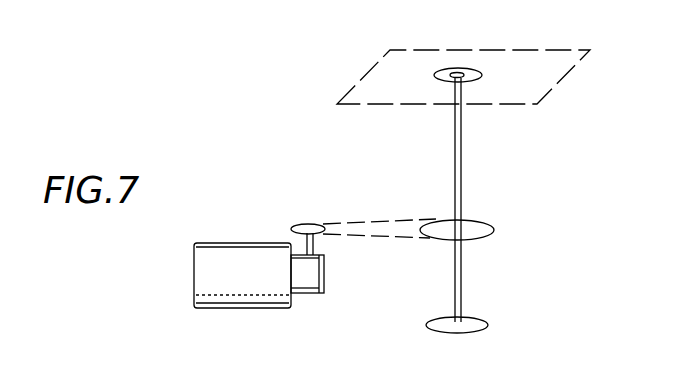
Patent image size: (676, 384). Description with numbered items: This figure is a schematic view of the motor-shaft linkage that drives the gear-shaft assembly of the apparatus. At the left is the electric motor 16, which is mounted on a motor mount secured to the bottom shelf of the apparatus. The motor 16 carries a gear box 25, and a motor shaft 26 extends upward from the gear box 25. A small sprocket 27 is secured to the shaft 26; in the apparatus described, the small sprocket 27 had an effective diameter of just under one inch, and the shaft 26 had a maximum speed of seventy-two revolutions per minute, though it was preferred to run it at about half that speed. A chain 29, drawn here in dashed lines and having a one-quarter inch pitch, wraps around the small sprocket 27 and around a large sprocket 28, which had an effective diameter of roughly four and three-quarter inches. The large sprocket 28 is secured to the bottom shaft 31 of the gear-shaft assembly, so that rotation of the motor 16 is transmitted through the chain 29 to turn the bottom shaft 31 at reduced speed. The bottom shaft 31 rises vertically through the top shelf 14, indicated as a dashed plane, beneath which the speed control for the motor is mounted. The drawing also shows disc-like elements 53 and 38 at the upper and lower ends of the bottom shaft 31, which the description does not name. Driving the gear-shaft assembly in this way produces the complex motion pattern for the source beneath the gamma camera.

The top shelf 14 is at (382, 77).
The upper disc 53 is at (475, 70).
The bottom shaft 31 is at (463, 172).
The large sprocket 28 is at (490, 228).
The lower disc 38 is at (477, 322).
The small sprocket 27 is at (313, 223).
The motor shaft 26 is at (317, 243).
The chain 29 is at (380, 221).
The electric motor 16 is at (203, 278).
The gear box 25 is at (313, 288).